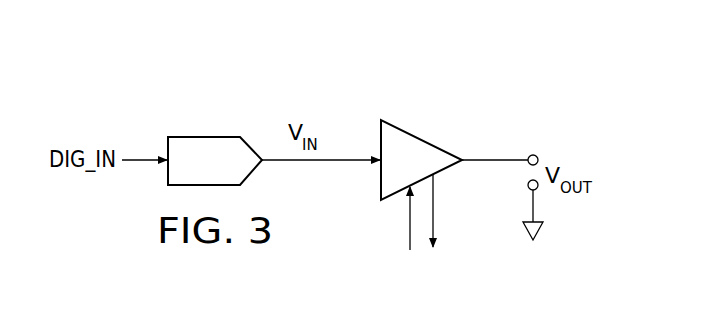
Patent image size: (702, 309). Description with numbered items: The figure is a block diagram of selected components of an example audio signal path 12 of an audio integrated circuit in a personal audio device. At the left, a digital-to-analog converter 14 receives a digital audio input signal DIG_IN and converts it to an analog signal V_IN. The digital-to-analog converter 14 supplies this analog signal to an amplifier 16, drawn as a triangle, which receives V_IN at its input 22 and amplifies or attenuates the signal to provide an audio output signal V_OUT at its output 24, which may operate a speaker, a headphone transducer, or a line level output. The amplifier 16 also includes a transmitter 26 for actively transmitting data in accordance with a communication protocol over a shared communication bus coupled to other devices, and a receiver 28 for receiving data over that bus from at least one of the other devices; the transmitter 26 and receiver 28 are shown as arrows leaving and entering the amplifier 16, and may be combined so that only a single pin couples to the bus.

The audio signal path 12 is at (262, 76).
The digital-to-analog converter 14 is at (205, 137).
The amplifier 16 is at (424, 141).
The input 22 is at (379, 150).
The output 24 is at (487, 160).
The transmitter 26 is at (440, 176).
The receiver 28 is at (404, 191).